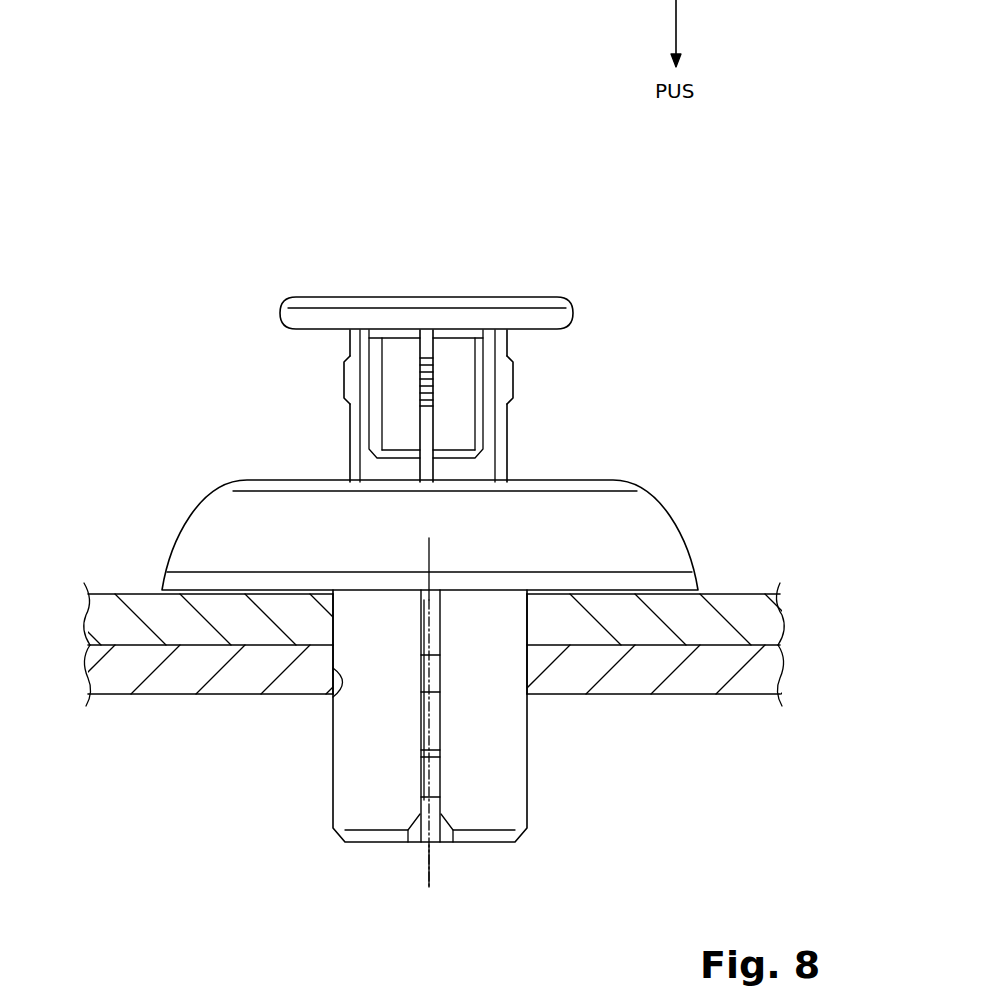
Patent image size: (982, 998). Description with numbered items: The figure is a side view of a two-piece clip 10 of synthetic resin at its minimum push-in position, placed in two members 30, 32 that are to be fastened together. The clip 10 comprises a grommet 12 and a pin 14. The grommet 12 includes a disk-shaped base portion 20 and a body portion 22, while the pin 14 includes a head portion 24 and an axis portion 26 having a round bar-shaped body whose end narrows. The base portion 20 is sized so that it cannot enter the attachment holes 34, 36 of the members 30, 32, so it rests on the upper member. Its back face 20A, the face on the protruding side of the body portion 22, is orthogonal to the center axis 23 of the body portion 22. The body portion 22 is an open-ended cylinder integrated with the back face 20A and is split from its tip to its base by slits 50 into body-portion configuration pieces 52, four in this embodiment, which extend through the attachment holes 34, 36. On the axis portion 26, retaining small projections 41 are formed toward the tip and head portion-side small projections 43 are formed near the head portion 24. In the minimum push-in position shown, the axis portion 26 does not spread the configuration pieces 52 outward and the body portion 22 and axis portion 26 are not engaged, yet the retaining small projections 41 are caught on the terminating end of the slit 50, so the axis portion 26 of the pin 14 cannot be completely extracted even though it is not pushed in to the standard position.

The two-piece clip 10 is at (777, 193).
The grommet 12 is at (810, 238).
The pin 14 is at (700, 238).
The base portion 20 is at (677, 500).
The back face 20A is at (198, 596).
The body portion 22 is at (552, 762).
The center axis 23 is at (433, 870).
The head portion 24 is at (588, 310).
The axis portion 26 is at (513, 443).
The member 30 is at (105, 596).
The member 32 is at (110, 697).
The attachment hole 34 is at (333, 622).
The attachment hole 36 is at (333, 697).
The retaining small projections 41 is at (440, 770).
The head portion-side small projections 43 is at (422, 378).
The slit 50 is at (424, 726).
The body-portion configuration pieces 52 is at (322, 778).